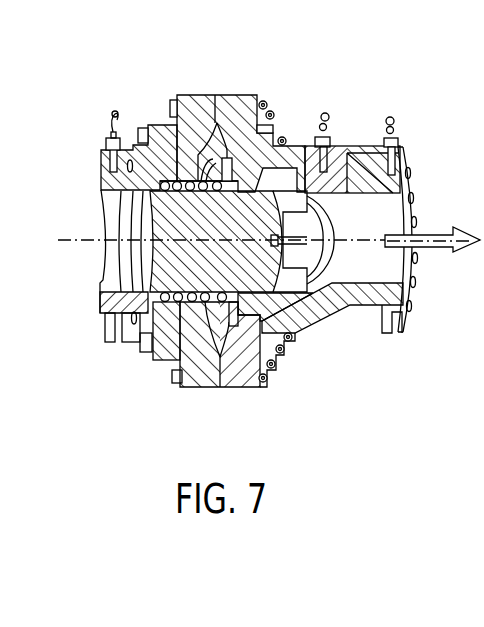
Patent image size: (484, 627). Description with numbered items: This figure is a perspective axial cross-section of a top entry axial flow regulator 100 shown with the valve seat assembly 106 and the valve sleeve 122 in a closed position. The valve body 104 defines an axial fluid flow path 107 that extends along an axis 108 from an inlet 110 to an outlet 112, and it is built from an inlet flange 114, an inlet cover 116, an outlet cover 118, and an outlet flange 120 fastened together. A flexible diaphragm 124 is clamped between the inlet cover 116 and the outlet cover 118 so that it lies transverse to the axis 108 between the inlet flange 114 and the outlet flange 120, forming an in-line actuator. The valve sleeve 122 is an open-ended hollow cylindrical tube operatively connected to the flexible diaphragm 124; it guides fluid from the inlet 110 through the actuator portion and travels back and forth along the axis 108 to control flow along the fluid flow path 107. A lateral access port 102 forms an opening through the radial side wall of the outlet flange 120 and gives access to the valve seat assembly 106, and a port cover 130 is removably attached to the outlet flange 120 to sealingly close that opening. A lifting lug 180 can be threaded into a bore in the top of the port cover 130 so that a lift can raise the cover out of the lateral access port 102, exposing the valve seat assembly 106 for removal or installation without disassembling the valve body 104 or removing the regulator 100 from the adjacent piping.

The top entry axial flow regulator 100 is at (177, 72).
The lateral access port 102 is at (360, 131).
The valve body 104 is at (168, 404).
The valve seat assembly 106 is at (295, 150).
The axial fluid flow path 107 is at (431, 248).
The axis 108 is at (93, 240).
The inlet 110 is at (102, 222).
The outlet 112 is at (417, 213).
The inlet flange 114 is at (102, 330).
The inlet cover 116 is at (195, 383).
The outlet cover 118 is at (235, 373).
The outlet flange 120 is at (355, 307).
The valve sleeve 122 is at (183, 270).
The flexible diaphragm 124 is at (229, 135).
The port cover 130 is at (336, 148).
The lifting lug 180 is at (320, 112).